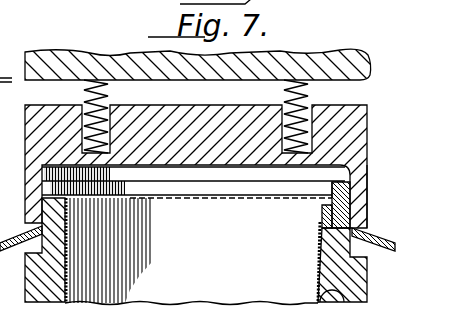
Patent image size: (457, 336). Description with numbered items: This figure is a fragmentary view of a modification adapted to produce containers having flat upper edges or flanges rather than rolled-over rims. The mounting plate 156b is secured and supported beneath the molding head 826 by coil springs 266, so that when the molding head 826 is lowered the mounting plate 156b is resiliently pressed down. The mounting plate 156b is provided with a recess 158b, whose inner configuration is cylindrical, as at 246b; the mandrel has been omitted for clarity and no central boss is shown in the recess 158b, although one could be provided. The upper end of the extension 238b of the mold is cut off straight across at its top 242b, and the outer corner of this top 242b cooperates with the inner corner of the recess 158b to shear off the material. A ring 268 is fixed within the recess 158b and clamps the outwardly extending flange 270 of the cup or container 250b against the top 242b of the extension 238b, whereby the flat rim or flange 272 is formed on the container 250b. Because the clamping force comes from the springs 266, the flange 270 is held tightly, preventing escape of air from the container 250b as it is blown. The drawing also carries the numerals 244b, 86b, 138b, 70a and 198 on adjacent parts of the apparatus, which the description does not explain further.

The molding head 826 is at (315, 53).
The mounting plate 156b is at (359, 112).
The coil springs 266 is at (112, 90).
The flat rim or flange 272 is at (371, 161).
The ring 268 is at (167, 192).
The recess 158b is at (222, 173).
The outwardly extending flange 270 is at (327, 195).
The top of the extension 242b is at (338, 204).
The gasket 244b is at (323, 223).
The extension of the mold 238b is at (333, 241).
The cup or container 250b is at (318, 276).
The clamp member 86b is at (338, 289).
The cylindrical inner configuration of the recess 246b is at (355, 217).
The arm 138b is at (392, 250).
The bracket 70a is at (40, 293).
The element 198 is at (339, 334).